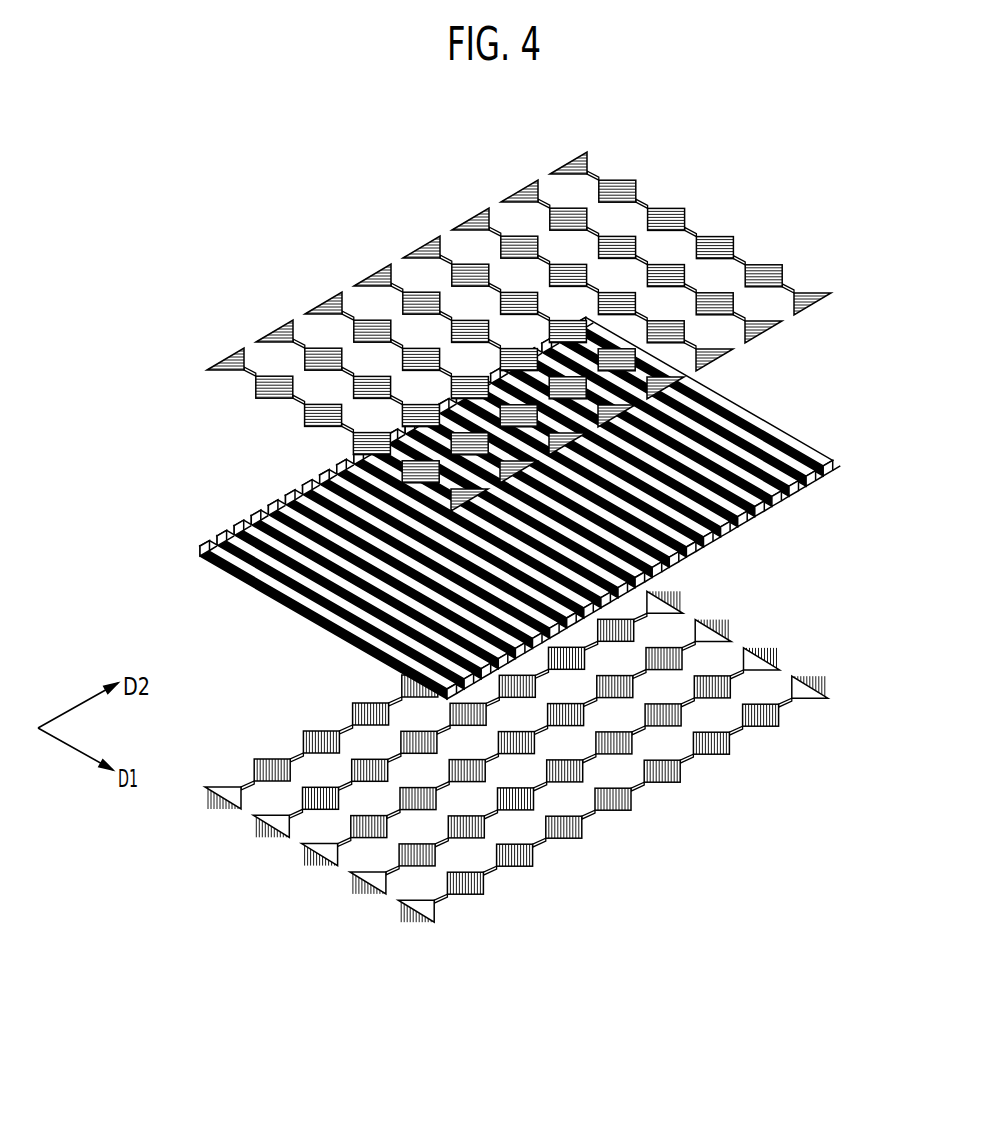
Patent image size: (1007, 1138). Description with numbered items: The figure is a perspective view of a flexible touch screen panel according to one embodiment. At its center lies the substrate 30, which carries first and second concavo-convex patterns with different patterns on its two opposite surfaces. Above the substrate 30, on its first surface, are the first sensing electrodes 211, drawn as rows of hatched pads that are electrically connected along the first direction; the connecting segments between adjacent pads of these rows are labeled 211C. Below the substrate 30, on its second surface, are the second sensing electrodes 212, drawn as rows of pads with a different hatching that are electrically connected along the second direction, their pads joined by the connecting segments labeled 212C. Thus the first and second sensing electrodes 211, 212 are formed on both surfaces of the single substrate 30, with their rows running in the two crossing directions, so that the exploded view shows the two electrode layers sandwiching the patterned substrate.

The first sensing electrodes 211 is at (257, 384).
The first connecting portions 211C is at (296, 400).
The second sensing electrodes 212 is at (270, 759).
The second connecting portions 212C is at (246, 784).
The substrate 30 is at (200, 548).